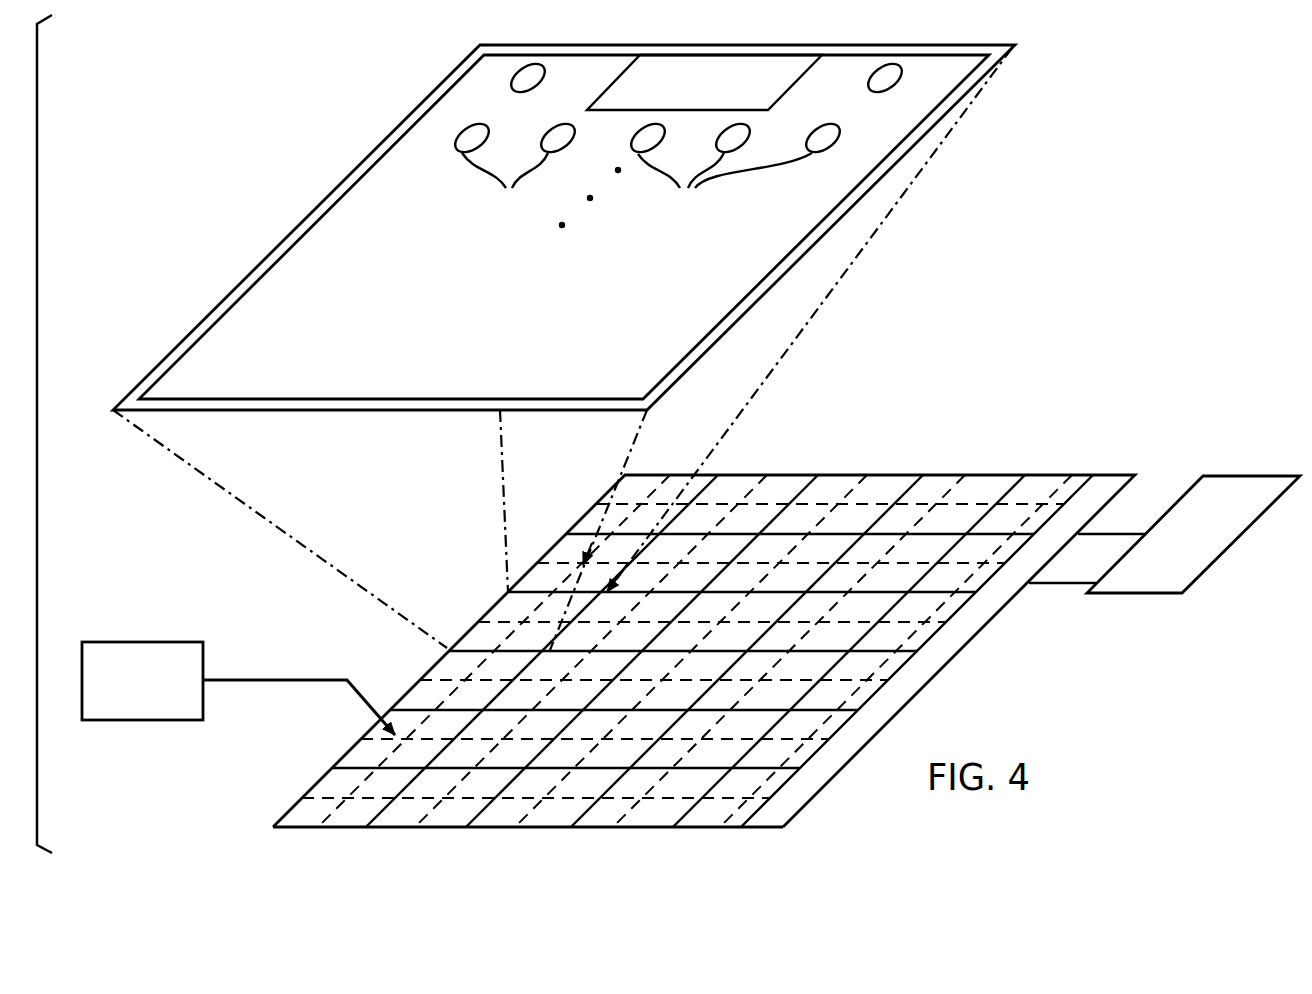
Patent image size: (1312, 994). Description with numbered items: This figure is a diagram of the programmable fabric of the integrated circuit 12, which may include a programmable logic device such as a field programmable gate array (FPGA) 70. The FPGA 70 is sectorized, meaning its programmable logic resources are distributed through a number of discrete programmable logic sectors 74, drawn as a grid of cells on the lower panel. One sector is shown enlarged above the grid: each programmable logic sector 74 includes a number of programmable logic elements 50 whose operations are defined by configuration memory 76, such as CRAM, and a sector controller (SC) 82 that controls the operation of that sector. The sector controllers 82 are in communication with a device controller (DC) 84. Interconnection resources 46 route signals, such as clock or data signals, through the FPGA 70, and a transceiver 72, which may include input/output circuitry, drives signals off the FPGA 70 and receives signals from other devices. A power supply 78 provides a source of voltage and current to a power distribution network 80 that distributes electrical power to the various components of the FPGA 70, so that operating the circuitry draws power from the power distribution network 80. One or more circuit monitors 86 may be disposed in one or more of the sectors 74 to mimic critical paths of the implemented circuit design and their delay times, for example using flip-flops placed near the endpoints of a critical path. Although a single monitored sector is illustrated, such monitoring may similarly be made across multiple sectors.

The integrated circuit 12 is at (893, 432).
The field programmable gate array 70 is at (679, 624).
The interconnection resources 46 is at (297, 226).
The programmable logic sectors 74 is at (378, 65).
The programmable logic elements 50 is at (647, 171).
The configuration memory 76 is at (540, 63).
The sector controller 82 is at (723, 62).
The power supply 78 is at (143, 642).
The circuit monitors 86 is at (428, 702).
The power distribution network 80 is at (352, 788).
The device controller 84 is at (528, 828).
The transceiver 72 is at (1222, 553).